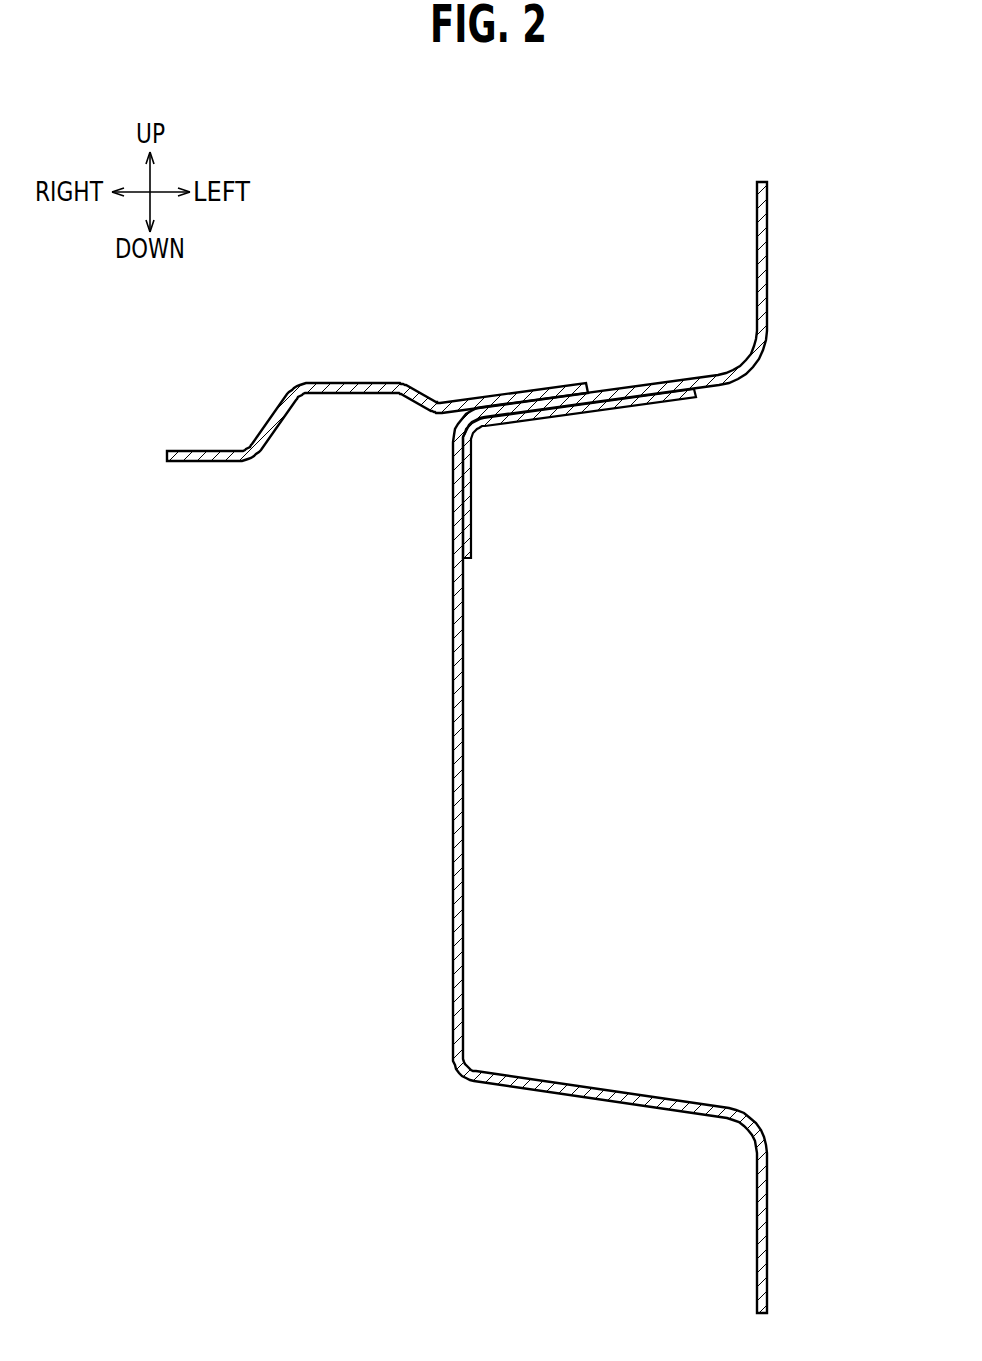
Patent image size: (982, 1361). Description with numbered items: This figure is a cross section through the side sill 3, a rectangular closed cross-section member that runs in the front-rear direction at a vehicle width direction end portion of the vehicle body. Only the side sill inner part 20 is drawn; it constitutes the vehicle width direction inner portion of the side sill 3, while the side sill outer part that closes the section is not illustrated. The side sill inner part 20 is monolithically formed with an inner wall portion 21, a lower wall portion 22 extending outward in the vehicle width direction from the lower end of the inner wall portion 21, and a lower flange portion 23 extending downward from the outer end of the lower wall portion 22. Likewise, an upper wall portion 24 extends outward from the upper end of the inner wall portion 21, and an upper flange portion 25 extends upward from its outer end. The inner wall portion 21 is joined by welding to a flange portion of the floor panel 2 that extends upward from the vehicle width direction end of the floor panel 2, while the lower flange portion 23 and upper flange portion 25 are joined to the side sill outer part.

The floor panel 2 is at (535, 390).
The side sill 3 is at (644, 747).
The side sill inner part 20 is at (627, 659).
The inner wall portion 21 is at (463, 771).
The lower wall portion 22 is at (620, 1092).
The lower flange portion 23 is at (768, 1252).
The upper wall portion 24 is at (640, 386).
The upper flange portion 25 is at (767, 248).